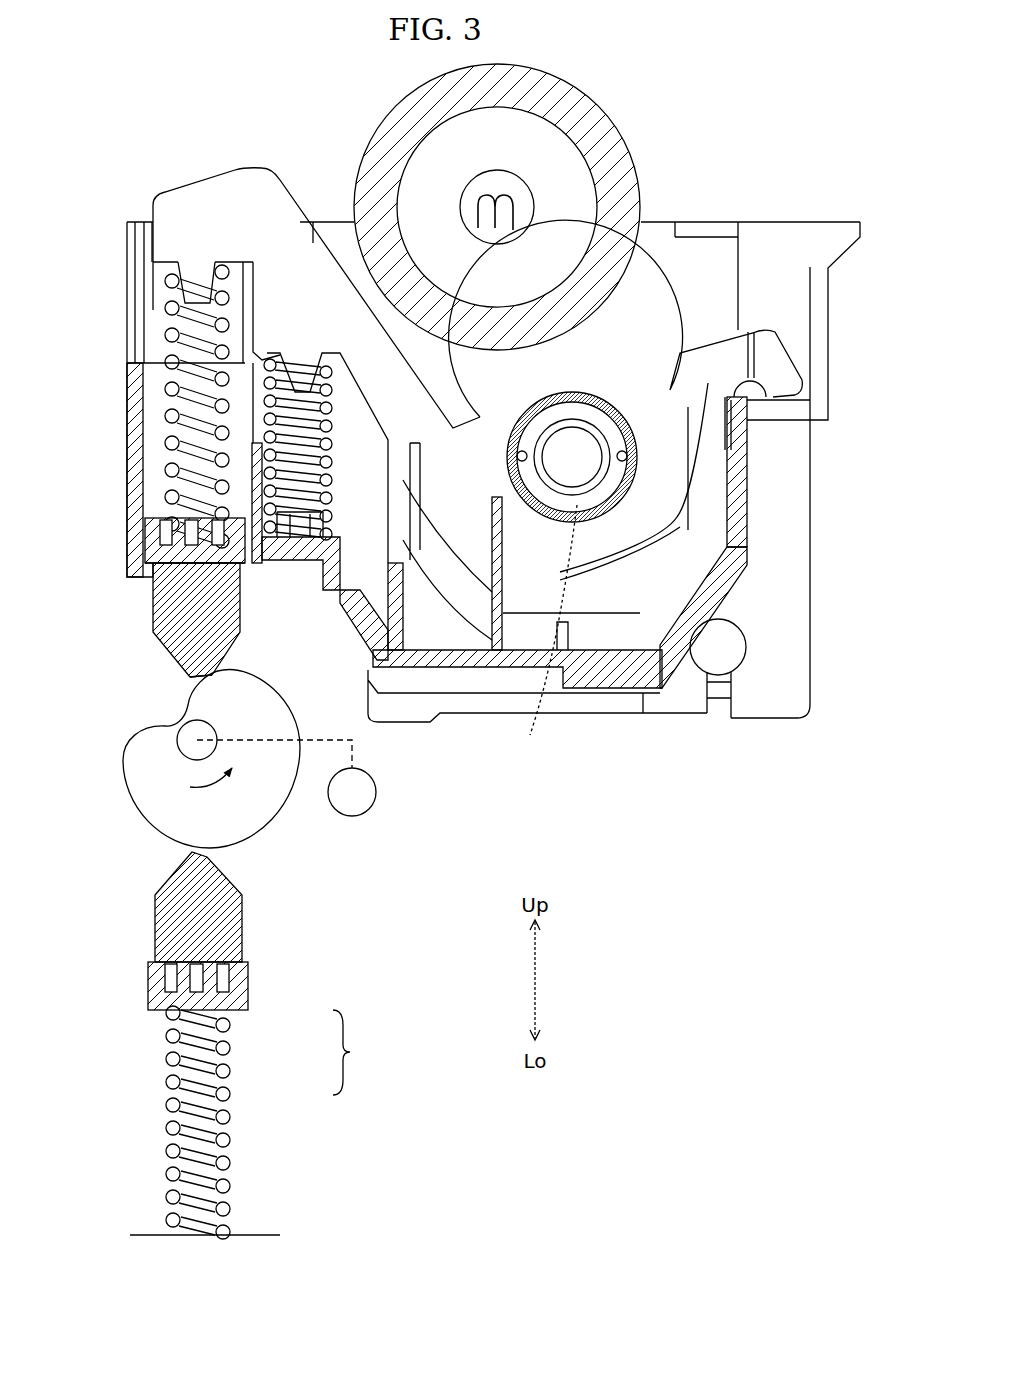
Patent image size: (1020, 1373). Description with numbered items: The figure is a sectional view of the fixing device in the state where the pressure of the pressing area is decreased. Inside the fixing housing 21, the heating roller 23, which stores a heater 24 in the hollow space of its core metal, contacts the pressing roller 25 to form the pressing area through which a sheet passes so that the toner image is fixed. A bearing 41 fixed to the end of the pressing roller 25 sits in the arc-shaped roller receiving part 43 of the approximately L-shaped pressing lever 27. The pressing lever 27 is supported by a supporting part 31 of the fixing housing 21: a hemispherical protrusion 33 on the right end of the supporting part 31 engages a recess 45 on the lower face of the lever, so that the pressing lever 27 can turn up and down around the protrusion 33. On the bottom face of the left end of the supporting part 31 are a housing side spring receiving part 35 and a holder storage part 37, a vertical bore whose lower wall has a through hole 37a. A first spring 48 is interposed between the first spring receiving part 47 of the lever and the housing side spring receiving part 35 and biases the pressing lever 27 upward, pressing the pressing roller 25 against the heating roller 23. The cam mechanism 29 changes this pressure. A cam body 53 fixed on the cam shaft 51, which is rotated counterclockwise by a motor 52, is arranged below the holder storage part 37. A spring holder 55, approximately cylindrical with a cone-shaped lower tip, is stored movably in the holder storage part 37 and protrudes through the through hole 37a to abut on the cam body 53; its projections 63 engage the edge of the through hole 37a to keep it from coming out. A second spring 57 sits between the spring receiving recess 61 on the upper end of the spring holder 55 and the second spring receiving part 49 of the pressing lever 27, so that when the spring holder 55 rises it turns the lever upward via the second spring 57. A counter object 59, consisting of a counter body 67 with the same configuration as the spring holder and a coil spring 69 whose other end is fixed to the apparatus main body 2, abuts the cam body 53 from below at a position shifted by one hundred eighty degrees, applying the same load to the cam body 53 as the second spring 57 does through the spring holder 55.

The apparatus main body 2 is at (260, 1235).
The fixing housing 21 is at (304, 370).
The heating roller 23 is at (599, 110).
The heater 24 is at (497, 170).
The pressing roller 25 is at (603, 337).
The pressing lever 27 is at (209, 166).
The cam mechanism 29 is at (368, 889).
The supporting part 31 is at (748, 548).
The protrusion 33 is at (760, 395).
The housing side spring receiving part 35 is at (283, 545).
The holder storage part 37 is at (150, 488).
The through hole 37a is at (153, 568).
The bearing 41 is at (604, 400).
The roller receiving part 43 is at (546, 633).
The recess 45 is at (727, 438).
The first spring receiving part 47 is at (300, 350).
The first spring 48 is at (318, 537).
The second spring receiving part 49 is at (183, 287).
The cam shaft 51 is at (178, 748).
The motor 52 is at (374, 788).
The cam body 53 is at (130, 793).
The spring holder 55 is at (176, 660).
The second spring 57 is at (168, 333).
The counter object 59 is at (357, 1052).
The spring receiving recess 61 is at (175, 540).
The projections 63 is at (188, 540).
The counter body 67 is at (248, 952).
The coil spring 69 is at (230, 1117).